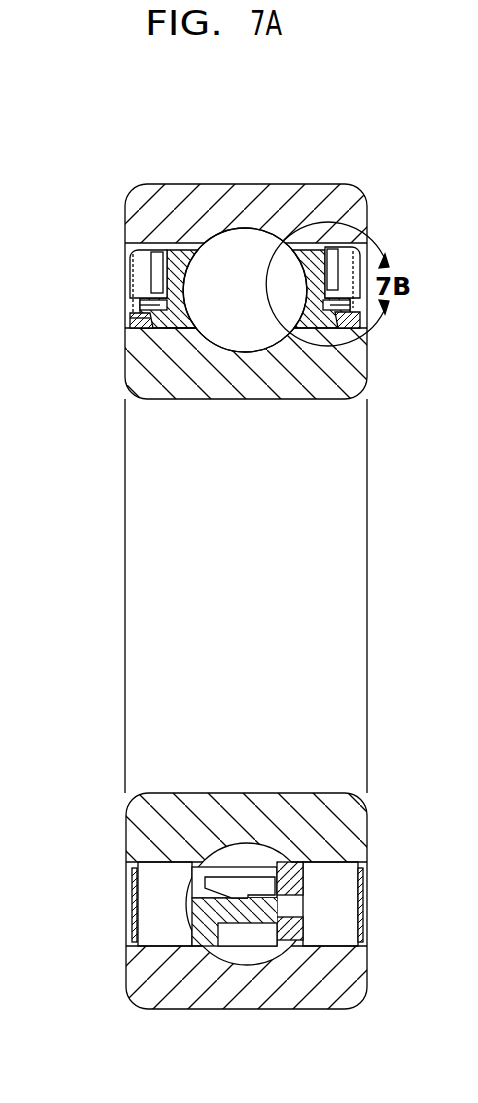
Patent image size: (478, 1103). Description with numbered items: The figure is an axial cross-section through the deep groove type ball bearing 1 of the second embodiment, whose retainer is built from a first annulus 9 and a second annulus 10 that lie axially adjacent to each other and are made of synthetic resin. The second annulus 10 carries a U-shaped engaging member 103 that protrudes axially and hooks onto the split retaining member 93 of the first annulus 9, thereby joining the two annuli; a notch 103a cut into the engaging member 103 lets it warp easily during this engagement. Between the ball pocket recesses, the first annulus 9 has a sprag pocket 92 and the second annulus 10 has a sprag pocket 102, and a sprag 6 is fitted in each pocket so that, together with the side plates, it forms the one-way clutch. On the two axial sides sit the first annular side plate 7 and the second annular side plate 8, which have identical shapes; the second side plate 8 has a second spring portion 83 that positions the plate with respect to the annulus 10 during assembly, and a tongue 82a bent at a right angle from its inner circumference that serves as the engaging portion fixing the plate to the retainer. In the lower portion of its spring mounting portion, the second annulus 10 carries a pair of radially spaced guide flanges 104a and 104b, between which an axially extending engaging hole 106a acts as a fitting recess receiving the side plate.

The deep groove type ball bearing 1 is at (371, 157).
The second spring portion 83 is at (157, 268).
The second annulus 10 is at (178, 253).
The first annulus 9 is at (310, 255).
The second annular side plate 8 is at (129, 272).
The guide flange 104a is at (129, 293).
The engaging hole 106a is at (131, 308).
The guide flange 104b is at (126, 326).
The tongue 82a is at (173, 332).
The sprag pocket 102 is at (191, 900).
The split retaining member 93 is at (238, 888).
The sprag pocket 92 is at (295, 885).
The first annular side plate 7 is at (361, 884).
The sprag 6 is at (136, 910).
The U-shaped engaging member 103 is at (220, 932).
The notch 103a is at (272, 920).